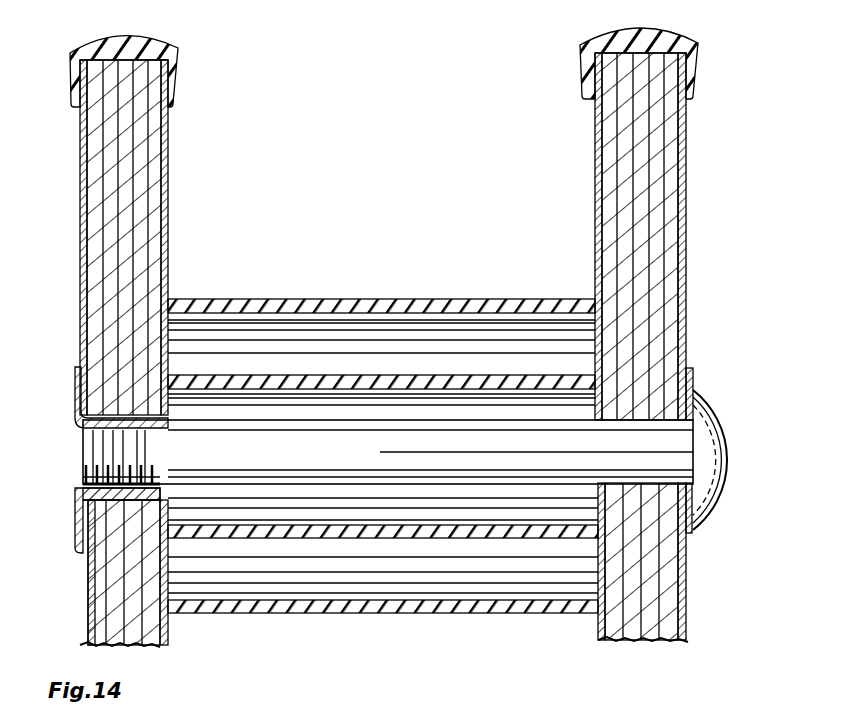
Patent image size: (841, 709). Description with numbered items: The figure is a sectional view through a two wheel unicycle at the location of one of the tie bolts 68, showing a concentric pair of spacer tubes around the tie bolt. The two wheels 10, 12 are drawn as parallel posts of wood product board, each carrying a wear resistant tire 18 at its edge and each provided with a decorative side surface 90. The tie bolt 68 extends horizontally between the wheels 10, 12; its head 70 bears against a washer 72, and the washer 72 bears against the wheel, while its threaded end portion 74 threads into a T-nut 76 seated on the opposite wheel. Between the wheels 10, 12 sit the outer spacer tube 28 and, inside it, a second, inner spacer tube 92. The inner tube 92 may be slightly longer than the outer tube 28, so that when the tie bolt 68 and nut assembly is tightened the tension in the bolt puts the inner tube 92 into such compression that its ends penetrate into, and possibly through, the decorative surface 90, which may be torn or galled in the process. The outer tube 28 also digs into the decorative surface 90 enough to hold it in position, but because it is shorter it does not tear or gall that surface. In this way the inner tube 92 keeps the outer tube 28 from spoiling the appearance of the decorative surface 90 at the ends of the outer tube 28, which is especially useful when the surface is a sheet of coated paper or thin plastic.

The wheel 10 is at (138, 218).
The wheel 12 is at (623, 192).
The wear resistant tire 18 is at (178, 44).
The outer spacer tube 28 is at (392, 299).
The tie bolt 68 is at (418, 482).
The head 70 is at (712, 452).
The washer 72 is at (692, 530).
The threaded end portion 74 is at (97, 457).
The T-nut 76 is at (75, 380).
The decorative side surface 90 is at (80, 160).
The inner spacer tube 92 is at (457, 378).